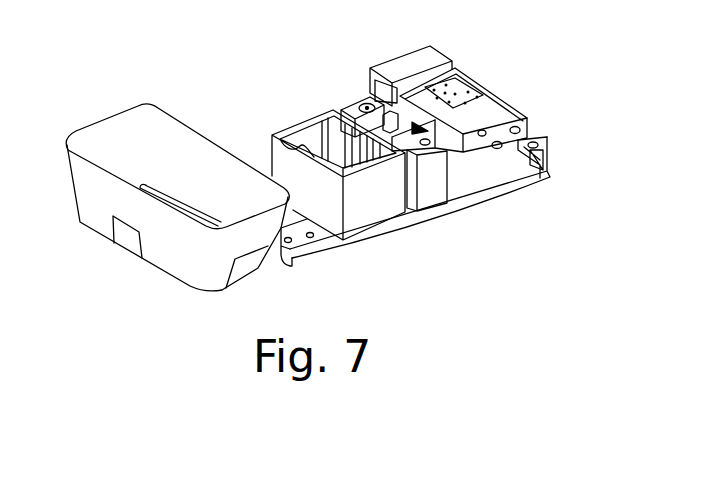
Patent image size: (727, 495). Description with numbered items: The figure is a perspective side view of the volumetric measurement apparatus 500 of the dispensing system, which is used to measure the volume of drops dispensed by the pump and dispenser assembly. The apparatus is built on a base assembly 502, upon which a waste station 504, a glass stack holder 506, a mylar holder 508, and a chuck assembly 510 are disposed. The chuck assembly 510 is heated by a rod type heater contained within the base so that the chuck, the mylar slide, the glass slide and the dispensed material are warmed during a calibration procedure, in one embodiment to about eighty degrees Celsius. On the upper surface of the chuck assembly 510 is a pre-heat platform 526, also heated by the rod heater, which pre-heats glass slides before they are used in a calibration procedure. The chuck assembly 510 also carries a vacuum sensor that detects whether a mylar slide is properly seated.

The volumetric measurement apparatus 500 is at (556, 100).
The base assembly 502 is at (517, 192).
The waste station 504 is at (122, 145).
The glass stack holder 506 is at (305, 135).
The mylar holder 508 is at (392, 122).
The chuck assembly 510 is at (473, 70).
The pre-heat platform 526 is at (476, 136).